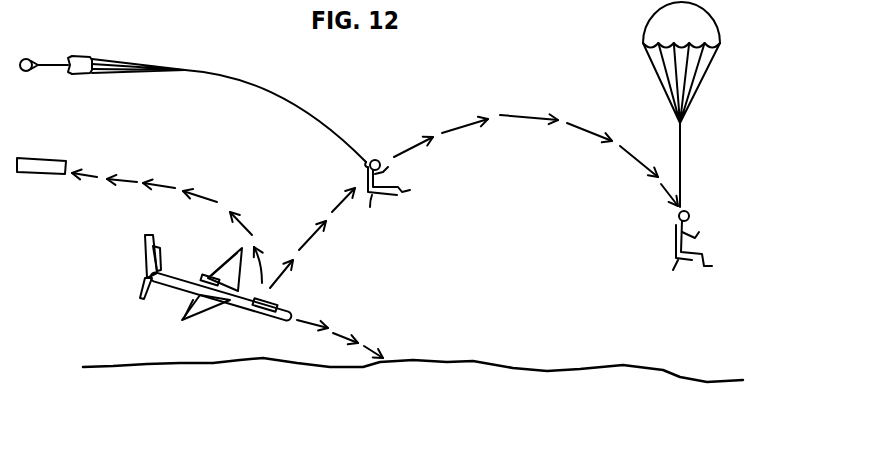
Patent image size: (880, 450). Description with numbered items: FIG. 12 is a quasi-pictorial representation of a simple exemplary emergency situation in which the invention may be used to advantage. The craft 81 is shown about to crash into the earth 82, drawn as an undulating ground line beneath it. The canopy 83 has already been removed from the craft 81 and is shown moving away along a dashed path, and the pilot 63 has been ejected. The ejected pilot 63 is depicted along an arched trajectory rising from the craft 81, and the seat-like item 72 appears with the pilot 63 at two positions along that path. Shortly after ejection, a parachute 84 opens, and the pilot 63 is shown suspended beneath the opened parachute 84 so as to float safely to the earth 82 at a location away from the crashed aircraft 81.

The pilot 63 is at (390, 188).
The occupant / pilot 72 is at (538, 222).
The craft 81 is at (145, 285).
The earth 82 is at (474, 361).
The canopy 83 is at (70, 148).
The parachute 84 is at (93, 58).